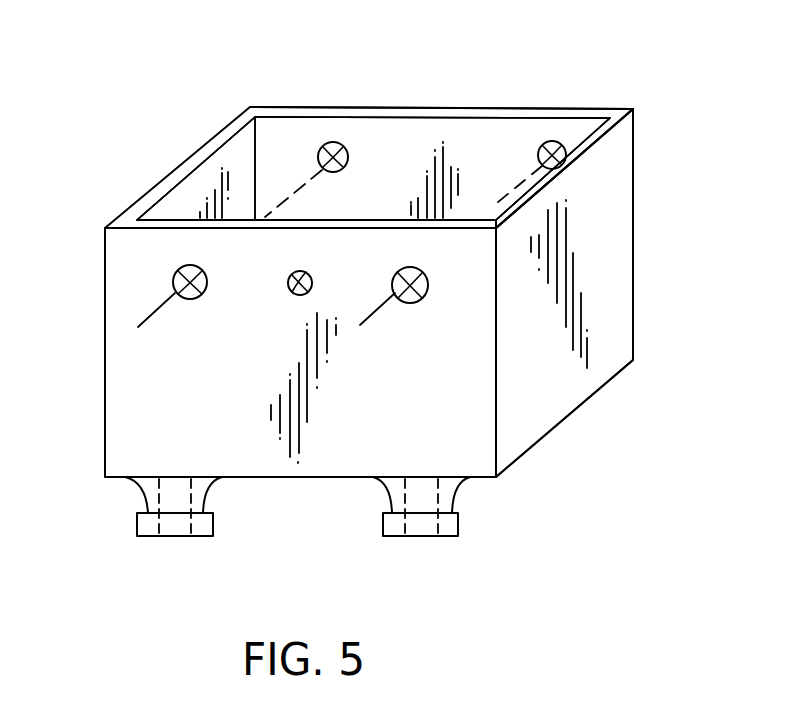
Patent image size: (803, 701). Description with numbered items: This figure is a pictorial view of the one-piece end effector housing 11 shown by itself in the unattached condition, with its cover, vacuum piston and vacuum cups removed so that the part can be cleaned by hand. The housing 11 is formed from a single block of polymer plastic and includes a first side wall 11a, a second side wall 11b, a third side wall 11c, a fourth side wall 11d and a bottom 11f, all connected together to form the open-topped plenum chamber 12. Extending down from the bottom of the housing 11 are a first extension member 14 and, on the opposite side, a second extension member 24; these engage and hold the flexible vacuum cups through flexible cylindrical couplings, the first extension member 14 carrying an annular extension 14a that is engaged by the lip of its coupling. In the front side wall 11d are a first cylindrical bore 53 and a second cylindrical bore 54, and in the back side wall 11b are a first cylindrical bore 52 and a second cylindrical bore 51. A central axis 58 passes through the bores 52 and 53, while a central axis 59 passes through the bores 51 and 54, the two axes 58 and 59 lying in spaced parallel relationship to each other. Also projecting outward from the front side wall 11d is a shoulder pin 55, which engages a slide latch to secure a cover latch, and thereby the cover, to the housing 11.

The housing 11 is at (363, 247).
The first side wall 11a is at (607, 202).
The second side wall 11b is at (485, 148).
The third side wall 11c is at (190, 192).
The fourth side wall 11d is at (120, 377).
The bottom 11f is at (535, 442).
The plenum chamber 12 is at (392, 200).
The first extension member 14 is at (453, 514).
The annular extension 14a is at (458, 520).
The second extension member 24 is at (137, 493).
The second cylindrical bore 51 is at (548, 143).
The first cylindrical bore 52 is at (333, 142).
The first cylindrical bore 53 is at (173, 285).
The second cylindrical bore 54 is at (418, 297).
The shoulder pin 55 is at (293, 295).
The central axis 58 is at (398, 106).
The central axis 59 is at (607, 108).